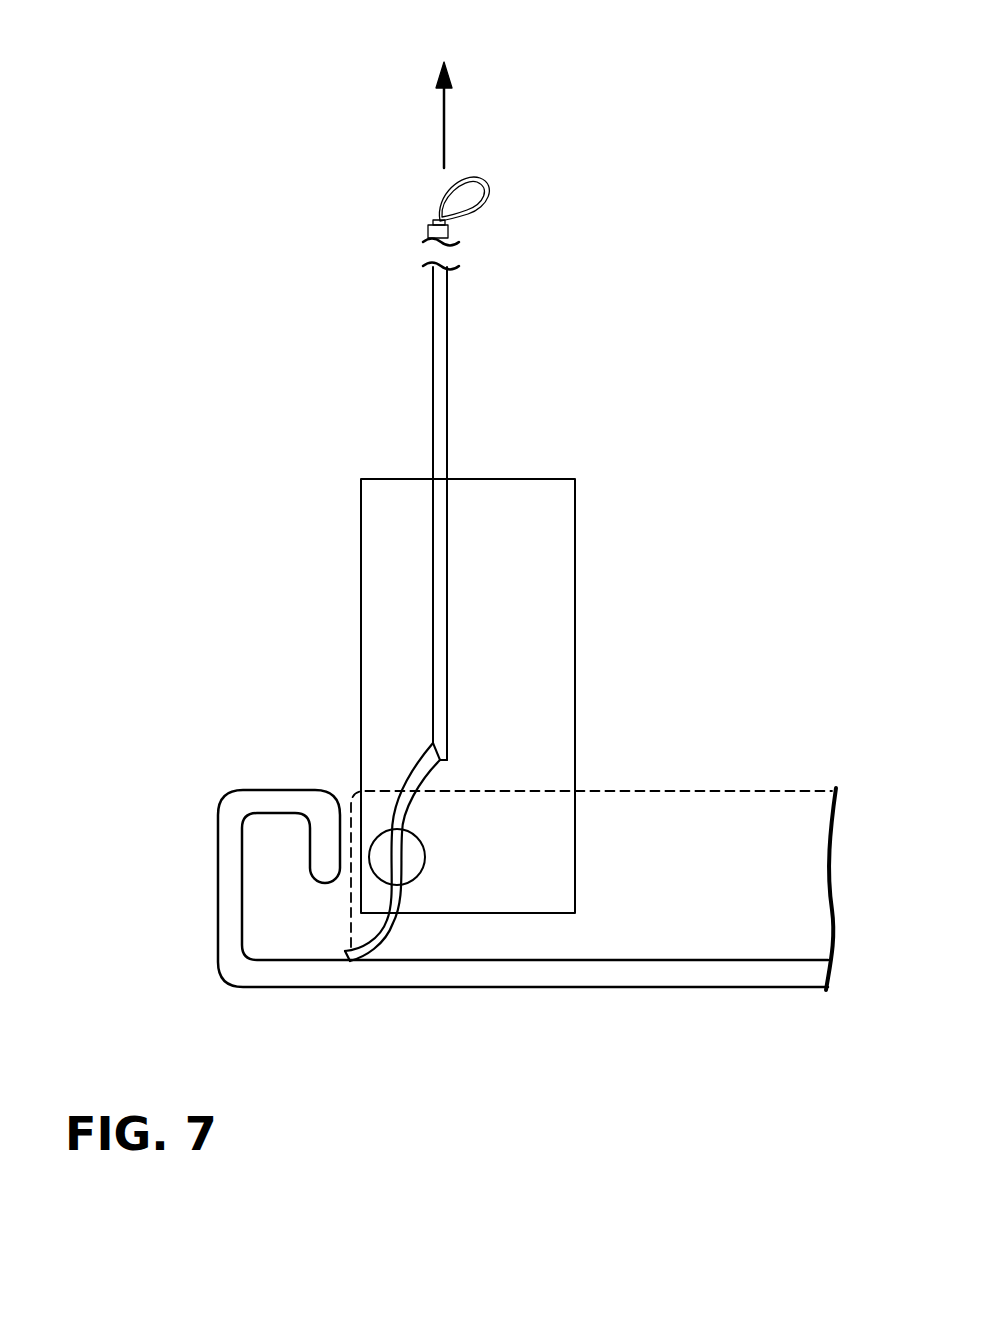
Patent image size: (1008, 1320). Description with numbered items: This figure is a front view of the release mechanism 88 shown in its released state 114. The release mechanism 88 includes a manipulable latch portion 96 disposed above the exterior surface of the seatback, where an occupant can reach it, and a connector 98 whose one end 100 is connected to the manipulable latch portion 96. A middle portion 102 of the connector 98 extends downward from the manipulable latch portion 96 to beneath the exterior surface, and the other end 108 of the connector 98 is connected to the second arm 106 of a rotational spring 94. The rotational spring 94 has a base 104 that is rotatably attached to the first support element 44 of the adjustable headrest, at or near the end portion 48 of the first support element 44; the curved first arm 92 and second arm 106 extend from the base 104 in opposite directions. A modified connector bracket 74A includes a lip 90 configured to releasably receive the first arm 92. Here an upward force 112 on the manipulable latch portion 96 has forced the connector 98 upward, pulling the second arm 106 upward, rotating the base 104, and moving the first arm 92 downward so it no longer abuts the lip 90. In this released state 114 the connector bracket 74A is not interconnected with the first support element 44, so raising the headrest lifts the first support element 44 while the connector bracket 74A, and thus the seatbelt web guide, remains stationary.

The first support element 44 is at (575, 858).
The end portion 48 is at (575, 710).
The connector bracket 74A is at (705, 988).
The release mechanism 88 is at (418, 300).
The lip 90 is at (274, 790).
The first arm 92 is at (347, 950).
The rotational spring 94 is at (402, 872).
The manipulable latch portion 96 is at (473, 178).
The connector 98 is at (447, 312).
The one end 100 is at (452, 228).
The middle portion 102 is at (447, 395).
The base 104 is at (407, 847).
The second arm 106 is at (440, 760).
The other end 108 is at (442, 750).
The upward force 112 is at (440, 130).
The released state 114 is at (338, 752).